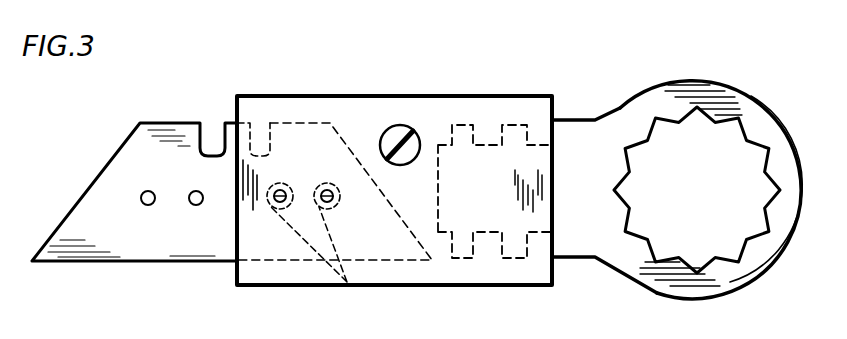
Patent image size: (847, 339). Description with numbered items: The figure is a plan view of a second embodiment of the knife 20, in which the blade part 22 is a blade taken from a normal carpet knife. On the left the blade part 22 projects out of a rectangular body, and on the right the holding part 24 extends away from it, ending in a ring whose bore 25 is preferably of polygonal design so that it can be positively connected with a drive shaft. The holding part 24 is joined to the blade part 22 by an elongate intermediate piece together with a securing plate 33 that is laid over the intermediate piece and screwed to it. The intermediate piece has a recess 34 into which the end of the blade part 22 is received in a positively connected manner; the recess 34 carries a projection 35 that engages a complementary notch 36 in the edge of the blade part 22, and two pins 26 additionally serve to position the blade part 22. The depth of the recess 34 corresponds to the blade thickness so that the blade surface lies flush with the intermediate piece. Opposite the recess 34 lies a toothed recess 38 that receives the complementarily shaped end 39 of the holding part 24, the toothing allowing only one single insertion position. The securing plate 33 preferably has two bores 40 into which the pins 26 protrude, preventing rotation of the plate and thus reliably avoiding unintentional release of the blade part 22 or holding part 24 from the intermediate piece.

The knife 20 is at (394, 154).
The blade part 22 is at (88, 201).
The holding part 24 is at (600, 132).
The bore 25 is at (672, 124).
The pins 26 is at (294, 183).
The securing plate 33 is at (368, 96).
The recess 34 is at (285, 152).
The projection 35 is at (253, 135).
The notch 36 is at (262, 140).
The toothed recess 38 is at (487, 222).
The end of the holding part 39 is at (488, 173).
The bores 40 is at (350, 287).